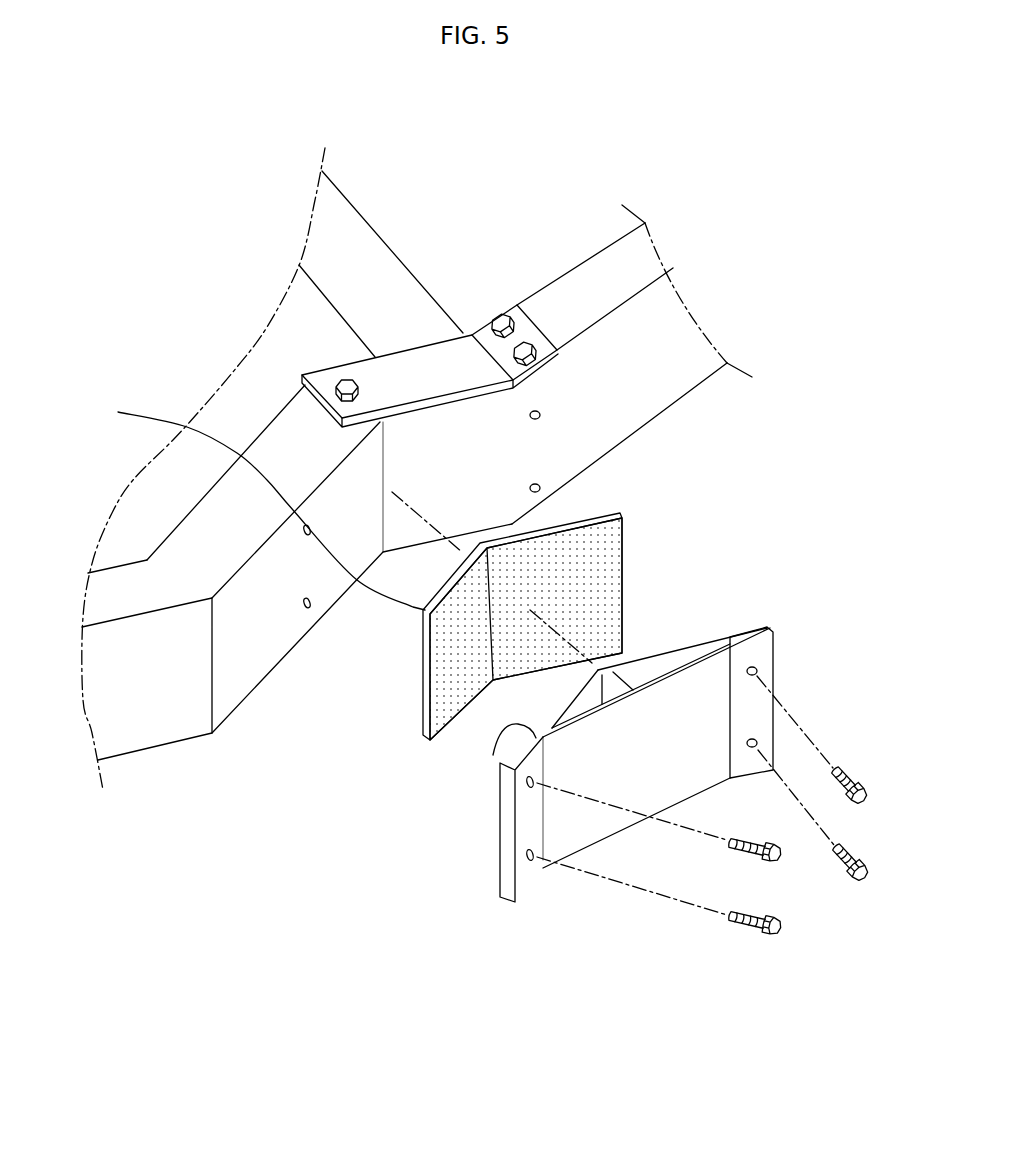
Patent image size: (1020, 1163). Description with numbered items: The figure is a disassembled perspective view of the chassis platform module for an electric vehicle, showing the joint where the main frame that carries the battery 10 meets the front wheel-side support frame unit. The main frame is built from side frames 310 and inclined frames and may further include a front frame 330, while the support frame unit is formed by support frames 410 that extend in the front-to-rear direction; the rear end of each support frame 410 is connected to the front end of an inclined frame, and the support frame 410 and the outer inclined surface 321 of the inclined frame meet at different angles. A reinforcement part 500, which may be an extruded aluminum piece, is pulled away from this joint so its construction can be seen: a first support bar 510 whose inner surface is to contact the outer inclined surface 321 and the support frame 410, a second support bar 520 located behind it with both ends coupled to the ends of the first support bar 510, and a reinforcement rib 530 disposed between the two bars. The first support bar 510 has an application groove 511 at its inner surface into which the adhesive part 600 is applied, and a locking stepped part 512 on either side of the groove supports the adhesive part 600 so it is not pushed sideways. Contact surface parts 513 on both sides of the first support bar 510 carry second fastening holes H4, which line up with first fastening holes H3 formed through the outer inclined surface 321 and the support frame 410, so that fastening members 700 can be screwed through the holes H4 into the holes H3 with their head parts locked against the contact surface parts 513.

The battery 10 is at (212, 404).
The side frame 310 is at (143, 737).
The outer inclined surface 321 is at (237, 690).
The front frame 330 is at (327, 235).
The support frame 410 is at (635, 253).
The reinforcement part 500 is at (634, 758).
The first support bar 510 is at (568, 700).
The application groove 511 is at (682, 648).
The locking stepped part 512 is at (520, 730).
The contact surface part 513 is at (508, 847).
The second support bar 520 is at (675, 786).
The reinforcement rib 530 is at (622, 665).
The adhesive part 600 is at (249, 504).
The fastening member 700 is at (777, 940).
The first fastening hole H3 is at (309, 608).
The second fastening hole H4 is at (532, 861).